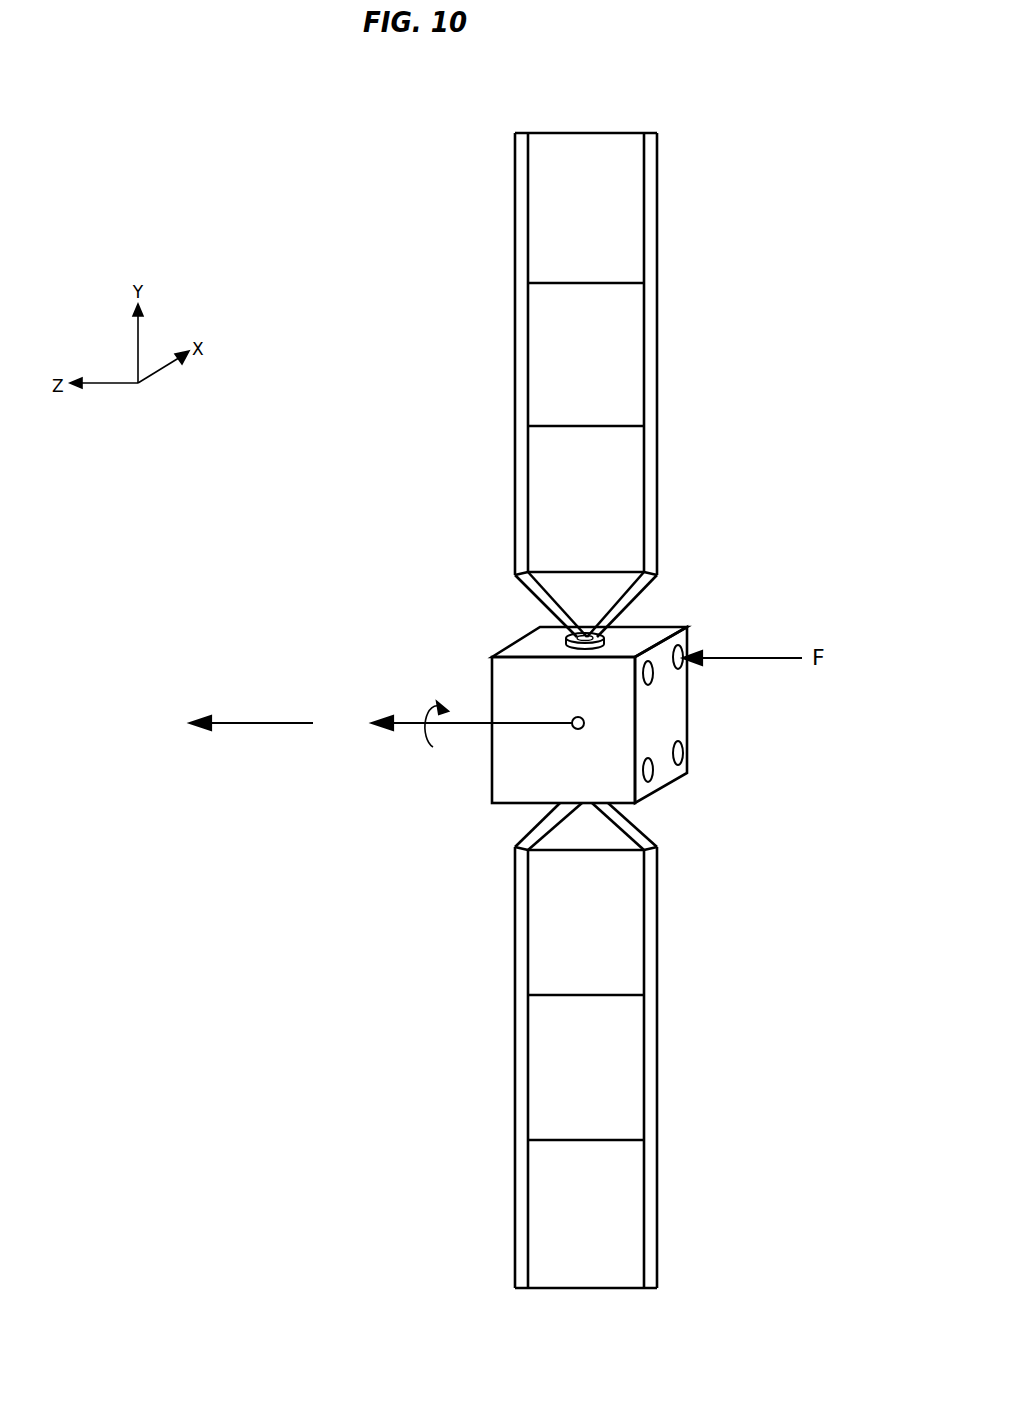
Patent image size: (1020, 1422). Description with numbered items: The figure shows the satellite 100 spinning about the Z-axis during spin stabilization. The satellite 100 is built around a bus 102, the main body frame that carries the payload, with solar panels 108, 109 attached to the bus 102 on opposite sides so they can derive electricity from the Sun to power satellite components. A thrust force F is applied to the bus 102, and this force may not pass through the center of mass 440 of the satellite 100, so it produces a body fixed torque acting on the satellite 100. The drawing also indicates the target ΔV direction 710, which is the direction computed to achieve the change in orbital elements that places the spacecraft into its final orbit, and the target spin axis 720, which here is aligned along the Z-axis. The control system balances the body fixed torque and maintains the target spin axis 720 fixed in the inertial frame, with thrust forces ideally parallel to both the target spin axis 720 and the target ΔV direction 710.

The satellite 100 is at (348, 284).
The bus 102 is at (505, 645).
The solar panel 108 is at (657, 352).
The solar panel 109 is at (657, 1072).
The center of mass 440 is at (577, 731).
The target ΔV direction 710 is at (249, 722).
The target spin axis 720 is at (410, 722).